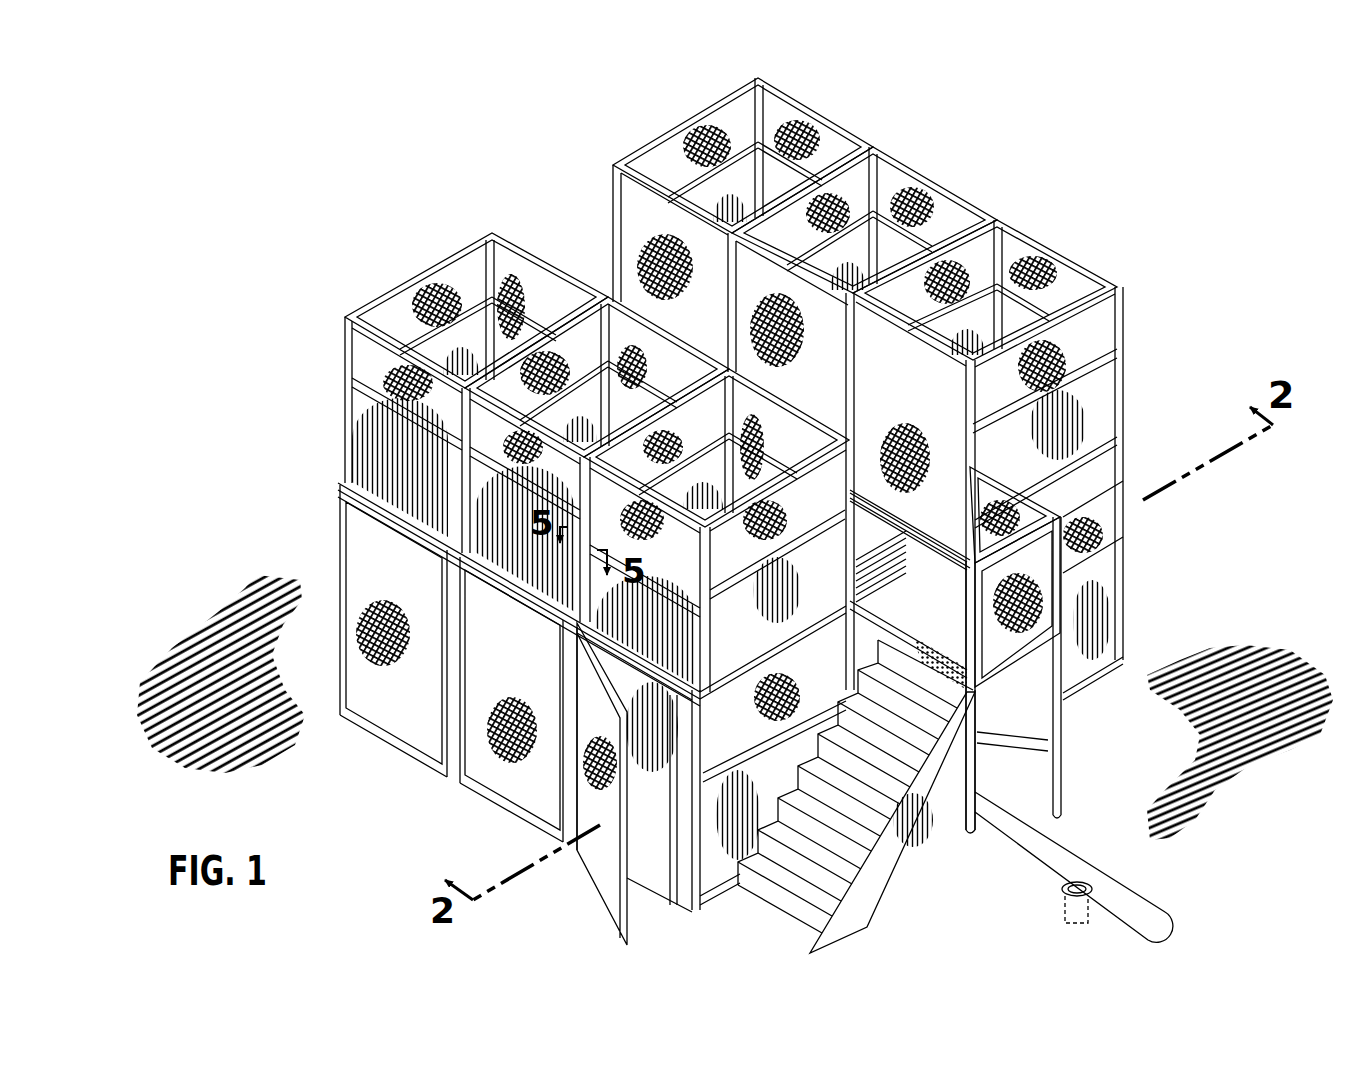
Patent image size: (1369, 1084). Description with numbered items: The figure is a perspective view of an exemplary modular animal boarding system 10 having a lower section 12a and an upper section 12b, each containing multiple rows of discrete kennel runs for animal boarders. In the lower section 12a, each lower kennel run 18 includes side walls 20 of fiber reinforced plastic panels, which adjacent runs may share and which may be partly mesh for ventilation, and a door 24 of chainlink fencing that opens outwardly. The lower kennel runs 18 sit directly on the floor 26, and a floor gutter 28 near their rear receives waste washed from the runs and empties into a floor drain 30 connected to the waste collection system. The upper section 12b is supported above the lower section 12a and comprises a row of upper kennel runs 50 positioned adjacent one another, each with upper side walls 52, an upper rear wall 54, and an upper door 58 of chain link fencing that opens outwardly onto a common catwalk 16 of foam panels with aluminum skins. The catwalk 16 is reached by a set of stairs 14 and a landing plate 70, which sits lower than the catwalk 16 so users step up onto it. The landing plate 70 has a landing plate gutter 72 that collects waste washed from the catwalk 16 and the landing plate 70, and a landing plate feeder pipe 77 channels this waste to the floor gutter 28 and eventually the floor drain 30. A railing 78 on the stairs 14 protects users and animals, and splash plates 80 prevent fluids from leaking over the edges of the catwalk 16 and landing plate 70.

The modular boarding system 10 is at (206, 225).
The lower section 12a is at (236, 560).
The upper section 12b is at (266, 372).
The stairs 14 is at (895, 882).
The catwalk 16 is at (881, 549).
The lower section kennel run 18 is at (383, 748).
The side walls 20 is at (789, 783).
The door 24 is at (409, 706).
The floor 26 is at (1274, 854).
The floor gutter 28 is at (1136, 915).
The floor drain 30 is at (1081, 882).
The upper kennel run 50 is at (861, 112).
The upper side walls 52 is at (1014, 458).
The upper rear wall 54 is at (449, 479).
The upper door 58 is at (652, 228).
The landing plate 70 is at (957, 615).
The landing plate gutter 72 is at (929, 656).
The landing plate feeder pipe 77 is at (980, 772).
The railing 78 is at (1064, 516).
The splash plates 80 is at (1014, 645).